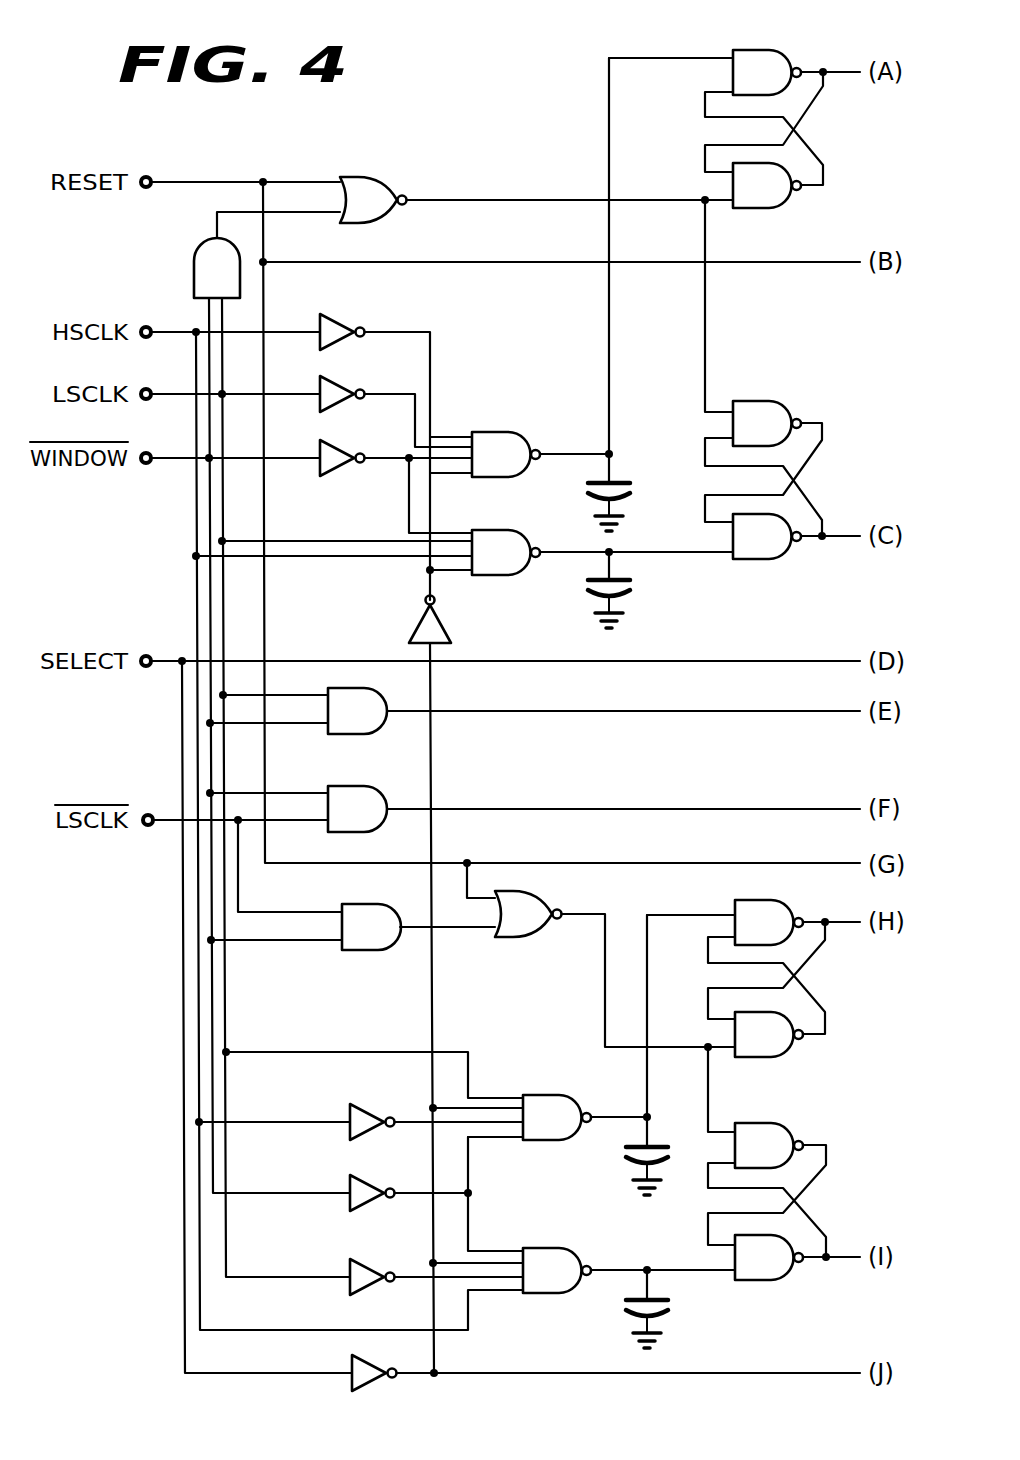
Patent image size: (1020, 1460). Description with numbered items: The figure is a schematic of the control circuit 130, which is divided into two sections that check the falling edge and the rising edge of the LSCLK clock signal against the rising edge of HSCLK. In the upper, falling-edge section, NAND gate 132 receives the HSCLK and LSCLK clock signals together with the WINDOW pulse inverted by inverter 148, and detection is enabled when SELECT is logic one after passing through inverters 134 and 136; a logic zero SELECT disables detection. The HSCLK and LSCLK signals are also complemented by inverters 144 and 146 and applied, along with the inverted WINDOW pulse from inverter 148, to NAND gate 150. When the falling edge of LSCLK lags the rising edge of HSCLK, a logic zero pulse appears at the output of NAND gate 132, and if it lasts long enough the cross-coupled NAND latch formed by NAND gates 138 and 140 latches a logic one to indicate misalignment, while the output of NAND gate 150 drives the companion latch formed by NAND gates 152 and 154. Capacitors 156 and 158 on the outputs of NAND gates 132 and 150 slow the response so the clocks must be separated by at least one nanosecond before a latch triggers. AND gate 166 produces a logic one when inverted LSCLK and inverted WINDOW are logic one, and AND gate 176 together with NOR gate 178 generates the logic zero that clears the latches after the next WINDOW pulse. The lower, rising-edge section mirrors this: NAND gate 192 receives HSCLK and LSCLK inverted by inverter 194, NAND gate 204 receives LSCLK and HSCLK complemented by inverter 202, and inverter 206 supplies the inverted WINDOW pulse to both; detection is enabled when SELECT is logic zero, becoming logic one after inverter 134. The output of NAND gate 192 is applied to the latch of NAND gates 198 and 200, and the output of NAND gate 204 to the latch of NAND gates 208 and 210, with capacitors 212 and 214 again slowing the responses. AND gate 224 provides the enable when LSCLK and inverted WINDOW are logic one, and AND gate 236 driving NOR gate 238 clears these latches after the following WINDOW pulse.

The control circuit 130 is at (434, 95).
The NAND gate 132 is at (510, 577).
The inverter 134 is at (345, 1383).
The inverter 136 is at (416, 623).
The NAND gate of NAND latch 138 is at (772, 562).
The NAND gate of NAND latch 140 is at (779, 405).
The inverter 144 is at (330, 318).
The inverter 146 is at (338, 385).
The inverter 148 is at (338, 478).
The NAND gate 150 is at (510, 432).
The NAND gate of NAND latch 152 is at (781, 54).
The NAND gate of NAND latch 154 is at (774, 208).
The capacitor 156 is at (634, 590).
The capacitor 158 is at (628, 476).
The AND gate 166 is at (372, 787).
The AND gate 176 is at (194, 262).
The NOR gate 178 is at (375, 178).
The NAND gate 192 is at (548, 1296).
The inverter 194 is at (345, 1267).
The NAND gate of NAND latch 198 is at (776, 1282).
The NAND gate of NAND latch 200 is at (788, 1129).
The inverter 202 is at (345, 1112).
The NAND gate 204 is at (540, 1094).
The inverter 206 is at (345, 1184).
The NAND gate of NAND latch 208 is at (786, 906).
The NAND gate of NAND latch 210 is at (778, 1057).
The capacitor 212 is at (675, 1312).
The capacitor 214 is at (625, 1157).
The AND gate 224 is at (340, 736).
The AND gate 236 is at (358, 951).
The NOR gate 238 is at (527, 938).